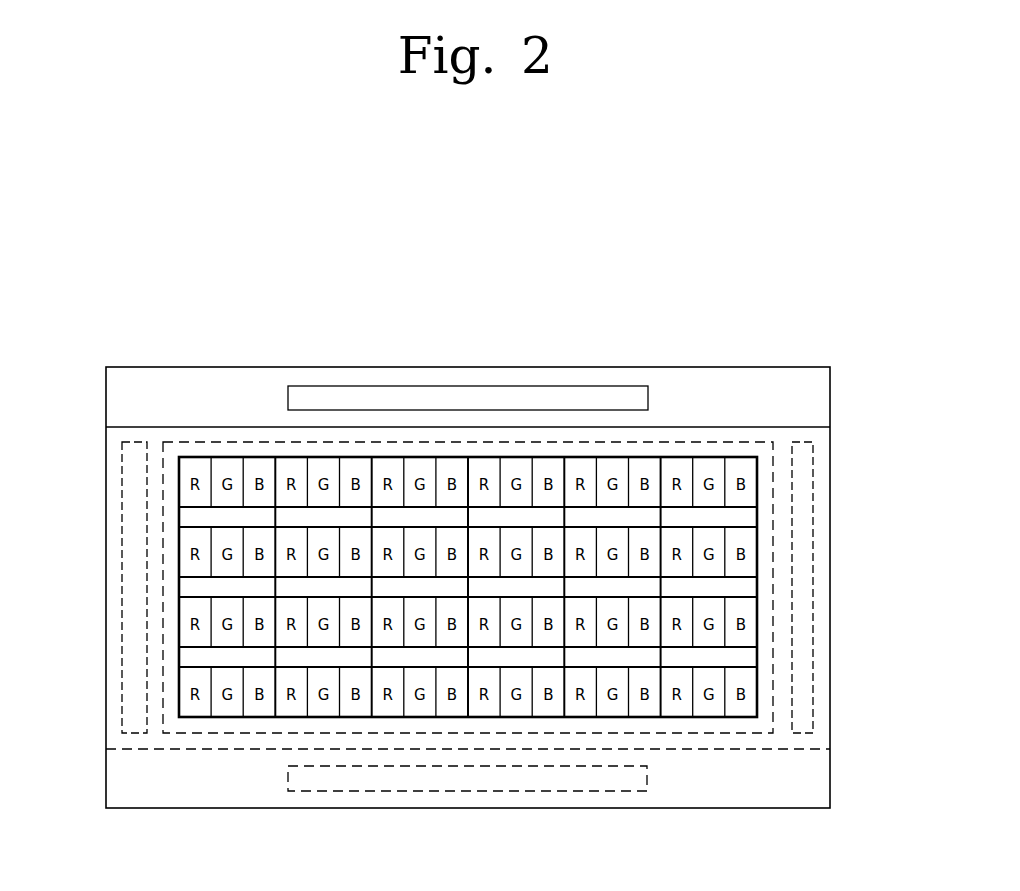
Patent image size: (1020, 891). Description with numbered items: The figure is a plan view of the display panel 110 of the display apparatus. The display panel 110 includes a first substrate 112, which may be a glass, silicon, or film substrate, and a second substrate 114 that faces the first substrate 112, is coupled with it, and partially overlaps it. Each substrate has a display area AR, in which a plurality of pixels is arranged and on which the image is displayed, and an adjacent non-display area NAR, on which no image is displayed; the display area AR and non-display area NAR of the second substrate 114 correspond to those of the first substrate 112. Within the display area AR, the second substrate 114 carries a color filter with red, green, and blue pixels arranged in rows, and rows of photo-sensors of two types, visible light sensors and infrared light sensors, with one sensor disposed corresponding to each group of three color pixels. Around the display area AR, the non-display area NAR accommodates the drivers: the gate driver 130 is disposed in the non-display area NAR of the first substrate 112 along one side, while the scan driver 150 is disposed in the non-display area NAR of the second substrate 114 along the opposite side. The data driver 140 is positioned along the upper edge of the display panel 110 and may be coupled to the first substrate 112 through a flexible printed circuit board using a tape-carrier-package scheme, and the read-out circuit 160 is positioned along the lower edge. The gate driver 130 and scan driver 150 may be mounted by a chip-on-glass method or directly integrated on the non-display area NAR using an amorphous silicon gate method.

The display panel 110 is at (802, 300).
The first substrate 112 is at (714, 367).
The second substrate 114 is at (780, 427).
The gate driver 130 is at (122, 581).
The data driver 140 is at (468, 386).
The scan driver 150 is at (815, 587).
The read-out circuit 160 is at (469, 791).
The display area AR is at (768, 508).
The non-display area NAR is at (825, 645).